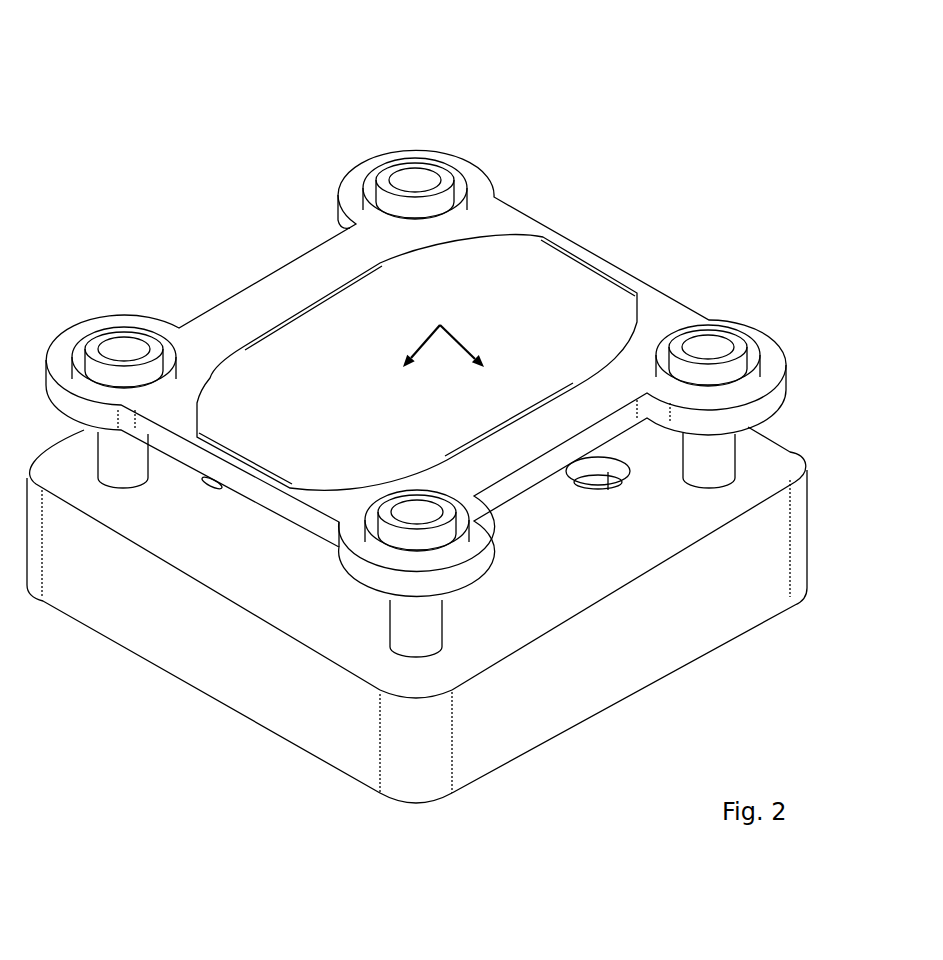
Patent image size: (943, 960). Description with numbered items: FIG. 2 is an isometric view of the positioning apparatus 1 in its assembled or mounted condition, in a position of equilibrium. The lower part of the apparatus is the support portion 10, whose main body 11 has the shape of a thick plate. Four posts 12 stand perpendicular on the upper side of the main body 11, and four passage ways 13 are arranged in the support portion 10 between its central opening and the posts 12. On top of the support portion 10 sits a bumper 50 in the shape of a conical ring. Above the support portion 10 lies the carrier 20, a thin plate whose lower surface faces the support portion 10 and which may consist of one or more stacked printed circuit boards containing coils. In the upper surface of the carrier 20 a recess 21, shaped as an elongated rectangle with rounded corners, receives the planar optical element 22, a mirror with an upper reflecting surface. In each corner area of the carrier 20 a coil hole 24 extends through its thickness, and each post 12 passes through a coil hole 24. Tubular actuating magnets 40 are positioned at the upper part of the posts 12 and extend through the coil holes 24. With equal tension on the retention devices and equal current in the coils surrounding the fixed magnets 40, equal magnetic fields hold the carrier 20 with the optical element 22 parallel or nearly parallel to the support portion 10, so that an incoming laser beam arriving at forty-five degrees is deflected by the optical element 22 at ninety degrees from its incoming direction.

The positioning apparatus 1 is at (230, 152).
The support portion 10 is at (127, 687).
The main body 11 is at (690, 600).
The post 12 is at (712, 462).
The passage way 13 is at (610, 490).
The carrier 20 is at (487, 218).
The recess 21 is at (580, 255).
The optical element 22 is at (600, 313).
The coil hole 24 is at (453, 186).
The actuating magnet 40 is at (97, 380).
The bumper 50 is at (513, 513).